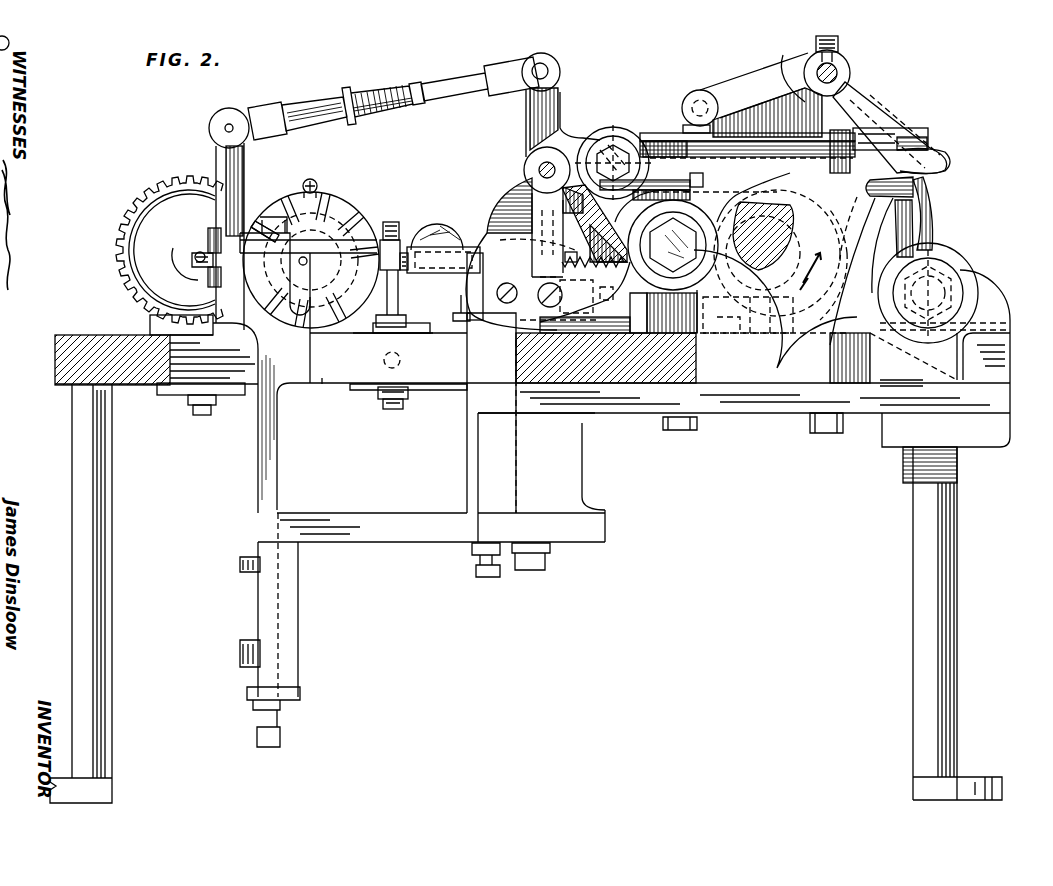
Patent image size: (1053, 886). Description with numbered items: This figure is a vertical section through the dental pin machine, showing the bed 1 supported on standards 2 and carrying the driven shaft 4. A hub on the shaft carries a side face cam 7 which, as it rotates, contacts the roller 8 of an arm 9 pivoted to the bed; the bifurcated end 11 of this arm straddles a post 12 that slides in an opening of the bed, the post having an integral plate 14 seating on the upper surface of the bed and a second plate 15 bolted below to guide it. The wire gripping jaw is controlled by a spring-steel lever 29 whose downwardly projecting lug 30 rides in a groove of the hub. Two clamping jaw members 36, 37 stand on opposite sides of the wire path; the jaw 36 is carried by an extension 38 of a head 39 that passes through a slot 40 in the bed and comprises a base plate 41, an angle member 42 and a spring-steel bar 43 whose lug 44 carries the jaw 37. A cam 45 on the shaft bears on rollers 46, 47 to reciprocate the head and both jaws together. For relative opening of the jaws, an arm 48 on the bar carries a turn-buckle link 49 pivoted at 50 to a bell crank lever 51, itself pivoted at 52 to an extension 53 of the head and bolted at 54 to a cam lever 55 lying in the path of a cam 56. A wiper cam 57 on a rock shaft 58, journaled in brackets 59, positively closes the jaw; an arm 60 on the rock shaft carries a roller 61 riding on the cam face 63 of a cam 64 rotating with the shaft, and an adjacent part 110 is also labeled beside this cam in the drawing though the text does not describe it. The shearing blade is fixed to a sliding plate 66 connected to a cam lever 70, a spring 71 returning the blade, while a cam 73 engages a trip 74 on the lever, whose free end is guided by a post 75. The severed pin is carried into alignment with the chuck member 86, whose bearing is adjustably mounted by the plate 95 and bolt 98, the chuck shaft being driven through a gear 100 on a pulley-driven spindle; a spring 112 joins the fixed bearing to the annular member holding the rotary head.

The bed 1 is at (57, 352).
The standards 2 is at (526, 594).
The shaft 4 is at (765, 270).
The side face cam 7 is at (775, 309).
The roller 8 is at (810, 285).
The arm 9 is at (466, 300).
The bifurcated end 11 is at (373, 327).
The post 12 is at (407, 287).
The plate 14 is at (367, 333).
The second plate 15 is at (378, 395).
The lever 29 is at (500, 190).
The lug 30 is at (760, 207).
The clamping jaw member 36 is at (406, 248).
The clamping jaw member 37 is at (385, 238).
The extension 38 is at (445, 234).
The head 39 is at (738, 391).
The slot 40 is at (322, 380).
The base plate 41 is at (650, 365).
The angle member 42 is at (422, 580).
The bar 43 is at (257, 450).
The lug 44 is at (325, 207).
The cam 45 is at (873, 235).
The roller 46 is at (962, 272).
The roller 47 is at (592, 268).
The arm 48 is at (245, 163).
The turn-buckle link 49 is at (386, 88).
The pivot 50 is at (548, 64).
The bell crank lever 51 is at (527, 107).
The pivot 52 is at (540, 165).
The extension 53 is at (530, 190).
The bolt 54 is at (612, 140).
The cam lever 55 is at (915, 185).
The cam 56 is at (805, 235).
The wiper cam 57 is at (947, 156).
The rock shaft 58 is at (840, 67).
The brackets 59 is at (850, 108).
The arm 60 is at (761, 95).
The roller 61 is at (699, 90).
The cam face 63 is at (790, 58).
The cam 64 is at (933, 237).
The plate 66 is at (462, 318).
The cam lever 70 is at (590, 222).
The spring 71 is at (540, 292).
The cam 73 is at (800, 315).
The trip 74 is at (697, 140).
The post 75 is at (905, 128).
The chuck member 86 is at (298, 212).
The plate 95 is at (181, 325).
The bolt 98 is at (212, 288).
The gear 100 is at (196, 192).
The band 110 is at (905, 212).
The spring 112 is at (310, 179).